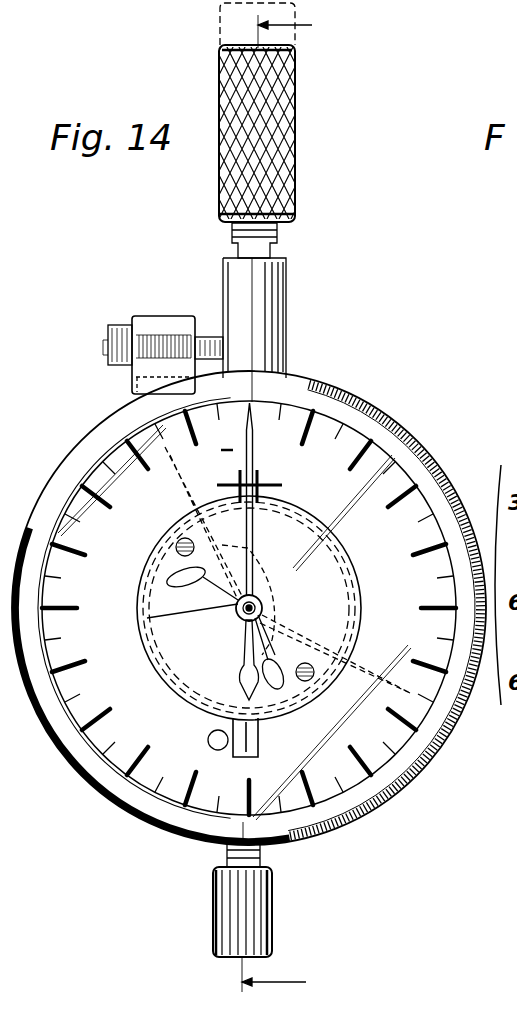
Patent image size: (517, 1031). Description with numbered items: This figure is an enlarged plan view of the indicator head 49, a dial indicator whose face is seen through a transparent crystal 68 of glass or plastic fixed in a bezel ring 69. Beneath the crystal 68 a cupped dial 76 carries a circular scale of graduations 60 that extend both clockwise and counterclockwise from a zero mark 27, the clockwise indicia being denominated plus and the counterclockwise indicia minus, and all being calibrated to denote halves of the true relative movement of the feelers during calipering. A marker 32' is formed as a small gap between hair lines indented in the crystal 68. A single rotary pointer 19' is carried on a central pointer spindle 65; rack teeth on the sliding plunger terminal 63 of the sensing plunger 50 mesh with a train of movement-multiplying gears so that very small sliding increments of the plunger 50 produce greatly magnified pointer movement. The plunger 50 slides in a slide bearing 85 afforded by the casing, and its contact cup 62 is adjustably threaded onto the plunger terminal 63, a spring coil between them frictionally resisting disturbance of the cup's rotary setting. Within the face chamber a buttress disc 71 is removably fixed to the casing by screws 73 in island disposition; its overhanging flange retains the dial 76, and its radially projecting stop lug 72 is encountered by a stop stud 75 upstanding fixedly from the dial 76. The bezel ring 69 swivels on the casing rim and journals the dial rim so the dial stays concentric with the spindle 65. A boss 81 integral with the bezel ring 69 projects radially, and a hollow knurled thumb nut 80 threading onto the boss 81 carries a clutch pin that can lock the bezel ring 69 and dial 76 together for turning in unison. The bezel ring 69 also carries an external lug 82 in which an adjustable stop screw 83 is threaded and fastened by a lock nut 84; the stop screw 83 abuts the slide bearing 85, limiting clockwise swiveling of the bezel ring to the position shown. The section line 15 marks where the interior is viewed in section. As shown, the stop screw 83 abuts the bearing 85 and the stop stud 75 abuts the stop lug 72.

The section line 15 is at (293, 504).
The contact cup 62 is at (232, 32).
The sensing plunger 50 is at (300, 100).
The plunger terminal 63 is at (278, 250).
The lock nut 84 is at (118, 335).
The external lug 82 is at (150, 322).
The adjustable stop screw 83 is at (209, 337).
The slide bearing 85 is at (290, 302).
The indicator head 49 is at (313, 368).
The bezel ring 69 is at (343, 405).
The cupped dial 76 is at (363, 480).
The scale of graduations 60 is at (399, 505).
The crystal 68 is at (372, 538).
The zero mark 27 is at (246, 447).
The marker 32' is at (269, 486).
The rotary pointer 19' is at (287, 551).
The screws 73 is at (213, 572).
The pointer spindle 65 is at (238, 611).
The buttress disc 71 is at (188, 700).
The stop stud 75 is at (210, 736).
The stop lug 72 is at (258, 740).
The boss 81 is at (250, 860).
The knurled thumb nut 80 is at (272, 902).